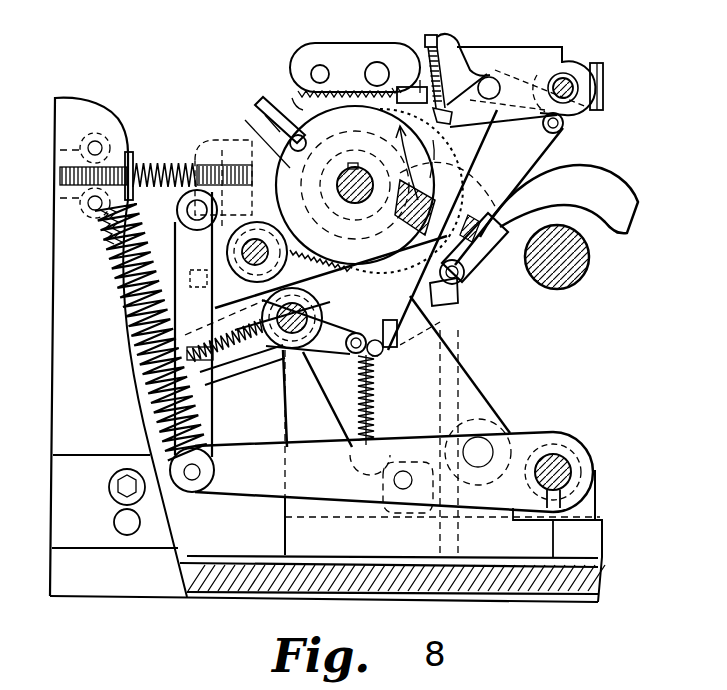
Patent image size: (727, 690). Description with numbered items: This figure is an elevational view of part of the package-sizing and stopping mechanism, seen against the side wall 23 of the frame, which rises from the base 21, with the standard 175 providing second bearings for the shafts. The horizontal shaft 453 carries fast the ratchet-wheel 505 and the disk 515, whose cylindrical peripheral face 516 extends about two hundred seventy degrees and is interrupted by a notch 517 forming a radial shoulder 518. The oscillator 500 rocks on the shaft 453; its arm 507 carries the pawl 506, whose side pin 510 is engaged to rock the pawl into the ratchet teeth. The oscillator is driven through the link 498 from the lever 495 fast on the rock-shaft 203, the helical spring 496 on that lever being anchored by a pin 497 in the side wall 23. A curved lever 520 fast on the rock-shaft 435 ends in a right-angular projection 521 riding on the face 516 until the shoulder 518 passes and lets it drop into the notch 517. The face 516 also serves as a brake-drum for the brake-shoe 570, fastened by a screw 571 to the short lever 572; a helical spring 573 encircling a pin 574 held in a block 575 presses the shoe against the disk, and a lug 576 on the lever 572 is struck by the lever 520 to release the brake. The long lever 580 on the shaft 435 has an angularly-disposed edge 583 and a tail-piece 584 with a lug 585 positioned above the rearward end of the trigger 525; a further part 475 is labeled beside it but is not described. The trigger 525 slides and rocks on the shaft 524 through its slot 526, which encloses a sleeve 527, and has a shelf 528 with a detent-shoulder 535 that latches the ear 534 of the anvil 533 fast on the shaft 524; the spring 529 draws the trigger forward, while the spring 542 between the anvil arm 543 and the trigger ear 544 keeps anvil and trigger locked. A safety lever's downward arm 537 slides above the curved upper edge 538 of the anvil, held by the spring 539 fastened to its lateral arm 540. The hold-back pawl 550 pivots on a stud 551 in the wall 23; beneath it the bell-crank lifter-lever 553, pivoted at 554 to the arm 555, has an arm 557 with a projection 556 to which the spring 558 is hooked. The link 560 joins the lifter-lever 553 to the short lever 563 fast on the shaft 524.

The side wall 23 is at (95, 100).
The base 21 is at (600, 586).
The pin 497 is at (80, 143).
The block 575 is at (128, 152).
The pin 574 is at (147, 163).
The helical spring 573 is at (165, 165).
The lug 576 is at (200, 140).
The screw 571 is at (222, 150).
The curved lever 520 is at (270, 120).
The right-angular projection 521 is at (287, 118).
The brake-shoe 570 is at (258, 126).
The notch 517 is at (292, 100).
The ratchet-wheel 505 is at (338, 88).
The right-angular projection 556 is at (392, 84).
The arm 557 is at (418, 84).
The helical spring 558 is at (440, 40).
The helical spring 529 is at (448, 58).
The hold-back pawl 550 is at (508, 62).
The pivot 554 is at (545, 72).
The arm 555 is at (592, 62).
The stud 551 is at (575, 84).
The bell-crank lifter-lever 553 is at (490, 112).
The oscillator 500 is at (312, 94).
The disk 515 is at (437, 145).
The peripheral face 516 is at (436, 168).
The radial shoulder 518 is at (298, 152).
The horizontal shaft 453 is at (338, 190).
The spring 539 is at (380, 210).
The downwardly-projecting arm 537 is at (372, 226).
The lateral arm 540 is at (412, 186).
The link 560 is at (557, 150).
The standard 175 is at (487, 396).
The lever 580 is at (620, 195).
The arm end 475 is at (616, 238).
The arm 507 is at (545, 228).
The pawl 506 is at (500, 247).
The angularly-disposed edge 583 is at (464, 272).
The pin 510 is at (440, 303).
The shelf 528 is at (440, 322).
The lever 572 is at (177, 212).
The link 498 is at (176, 242).
The rock-shaft 435 is at (228, 255).
The curved upper edge 538 is at (310, 260).
The sleeve 527 is at (342, 290).
The horizontal shaft 524 is at (288, 348).
The elongate slot 526 is at (275, 372).
The trigger 525 is at (237, 365).
The tail-piece 584 is at (205, 288).
The lug 585 is at (215, 328).
The helical spring 496 is at (133, 335).
The downwardly-projecting arm 543 is at (315, 400).
The lever 563 is at (356, 353).
The anvil 533 is at (364, 380).
The spring 542 is at (382, 400).
The ear 544 is at (382, 360).
The ear 534 is at (383, 352).
The detent-shoulder 535 is at (398, 342).
The rock-shaft 203 is at (572, 462).
The lever 495 is at (256, 494).